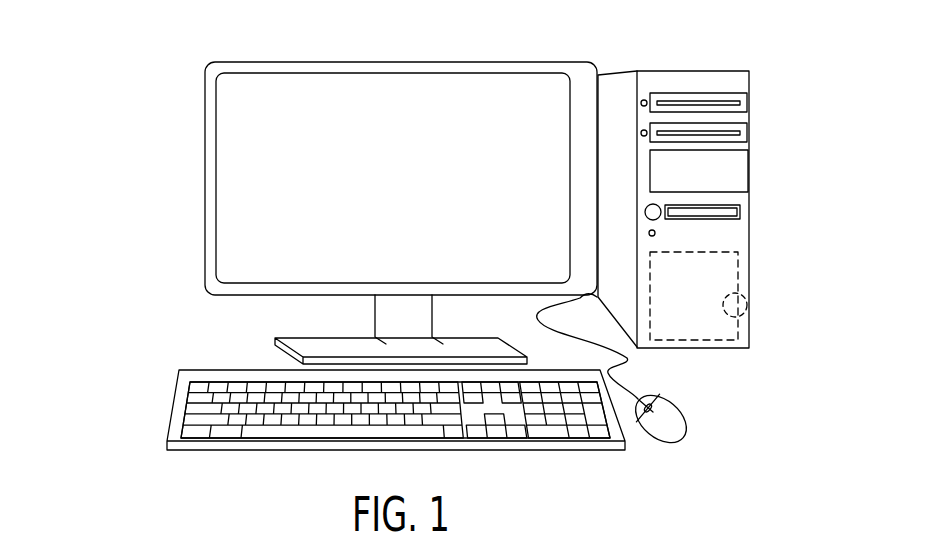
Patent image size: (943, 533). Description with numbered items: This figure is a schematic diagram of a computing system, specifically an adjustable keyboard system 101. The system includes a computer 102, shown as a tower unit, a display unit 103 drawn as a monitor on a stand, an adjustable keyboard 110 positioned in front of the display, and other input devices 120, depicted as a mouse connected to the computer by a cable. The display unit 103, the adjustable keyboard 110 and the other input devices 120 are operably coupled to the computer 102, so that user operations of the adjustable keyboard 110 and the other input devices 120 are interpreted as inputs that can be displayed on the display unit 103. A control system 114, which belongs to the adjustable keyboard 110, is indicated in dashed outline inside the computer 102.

The adjustable keyboard system 101 is at (118, 69).
The computer 102 is at (749, 82).
The display unit 103 is at (500, 85).
The adjustable keyboard 110 is at (170, 413).
The control system 114 is at (747, 315).
The other input devices 120 is at (683, 425).